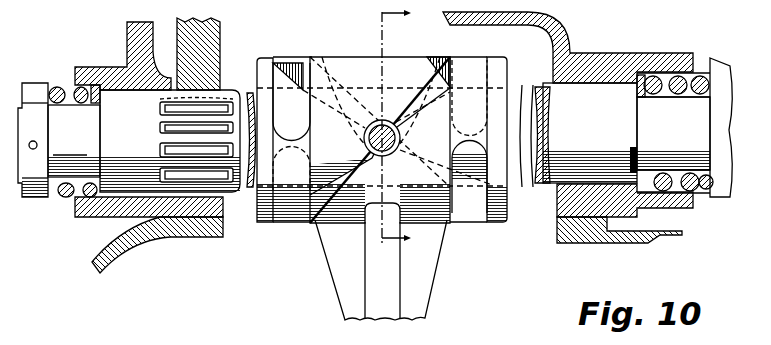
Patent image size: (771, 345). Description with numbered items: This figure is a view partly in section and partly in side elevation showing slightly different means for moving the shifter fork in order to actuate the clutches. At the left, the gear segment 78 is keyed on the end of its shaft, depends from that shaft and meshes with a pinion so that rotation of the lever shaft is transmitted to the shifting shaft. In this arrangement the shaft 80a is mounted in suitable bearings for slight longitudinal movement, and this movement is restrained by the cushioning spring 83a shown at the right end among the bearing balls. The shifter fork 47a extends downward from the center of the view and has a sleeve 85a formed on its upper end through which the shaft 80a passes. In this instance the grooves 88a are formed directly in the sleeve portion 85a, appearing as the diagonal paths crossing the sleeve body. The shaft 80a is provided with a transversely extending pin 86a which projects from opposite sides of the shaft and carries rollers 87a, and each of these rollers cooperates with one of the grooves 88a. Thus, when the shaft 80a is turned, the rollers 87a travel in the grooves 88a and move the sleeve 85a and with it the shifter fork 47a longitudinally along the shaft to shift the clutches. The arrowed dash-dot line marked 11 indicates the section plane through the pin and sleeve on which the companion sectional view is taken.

The gear segment 78 is at (188, 52).
The grooves 88a is at (295, 68).
The sleeve 85a is at (343, 63).
The transversely extending pin 86a is at (346, 167).
The rollers 87a is at (416, 97).
The shifter fork 47a is at (410, 285).
The shaft 80a is at (582, 122).
The cushioning spring 83a is at (698, 73).
The section line 11- 11 is at (410, 127).